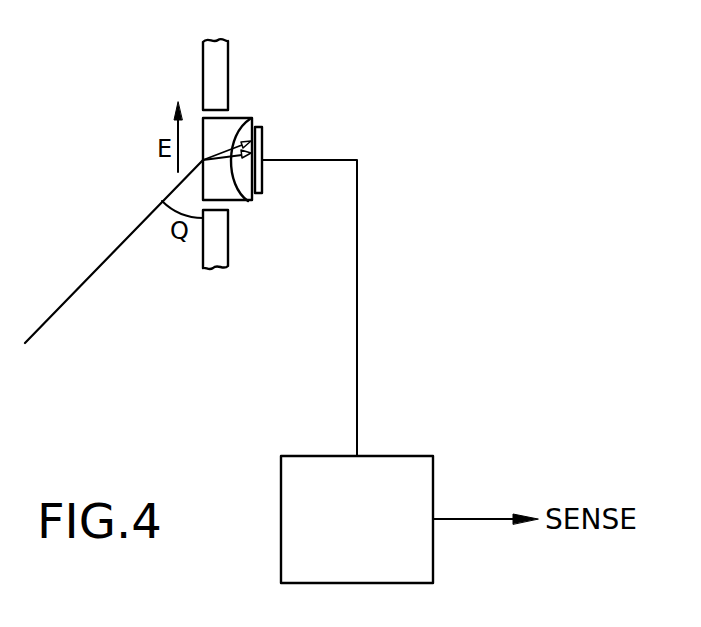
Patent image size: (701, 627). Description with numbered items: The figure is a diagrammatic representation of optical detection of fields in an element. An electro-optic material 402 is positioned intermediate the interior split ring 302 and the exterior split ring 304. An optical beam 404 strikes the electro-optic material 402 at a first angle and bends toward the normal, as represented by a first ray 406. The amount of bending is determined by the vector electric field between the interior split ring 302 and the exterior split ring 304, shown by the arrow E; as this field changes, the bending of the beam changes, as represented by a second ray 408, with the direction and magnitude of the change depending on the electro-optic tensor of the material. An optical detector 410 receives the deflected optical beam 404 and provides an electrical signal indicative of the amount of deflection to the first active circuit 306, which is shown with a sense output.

The interior split ring 302 is at (203, 77).
The exterior split ring 304 is at (217, 270).
The first active circuit 306 is at (395, 455).
The electro-optic material 402 is at (257, 123).
The optical beam 404 is at (117, 253).
The first ray 406 is at (240, 116).
The second ray 408 is at (248, 201).
The optical detector 410 is at (263, 135).